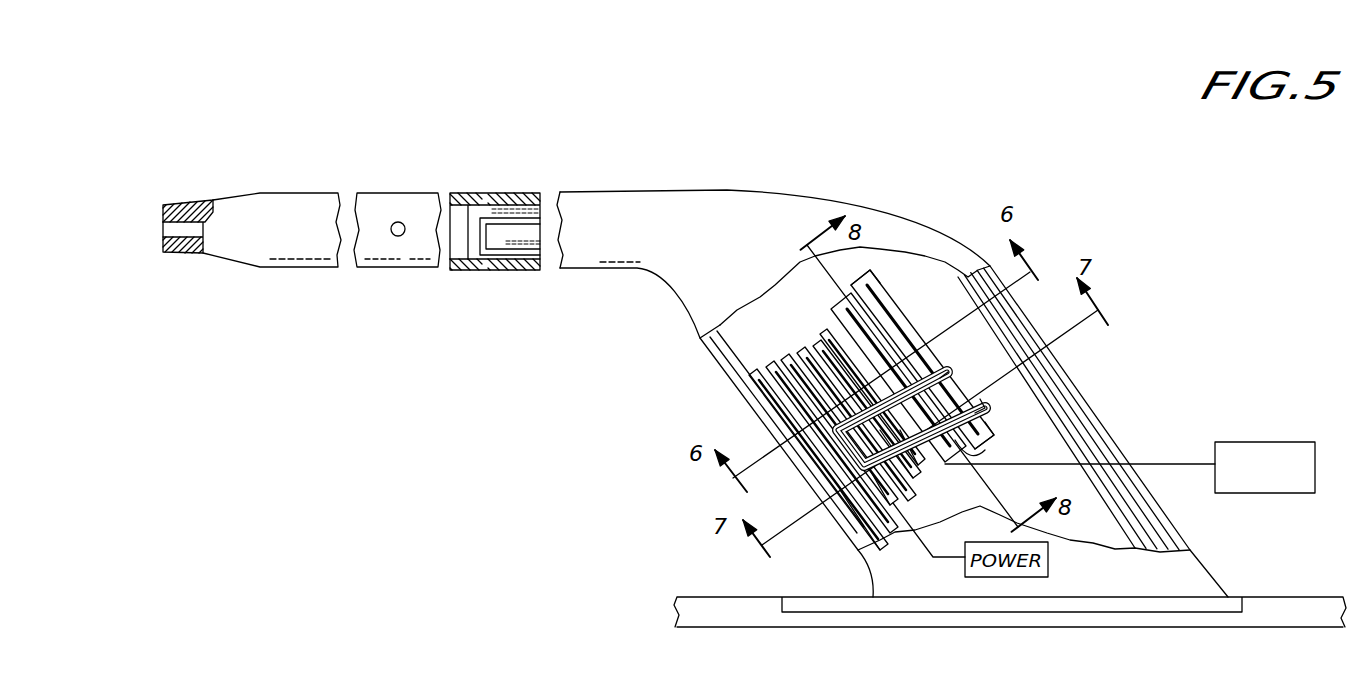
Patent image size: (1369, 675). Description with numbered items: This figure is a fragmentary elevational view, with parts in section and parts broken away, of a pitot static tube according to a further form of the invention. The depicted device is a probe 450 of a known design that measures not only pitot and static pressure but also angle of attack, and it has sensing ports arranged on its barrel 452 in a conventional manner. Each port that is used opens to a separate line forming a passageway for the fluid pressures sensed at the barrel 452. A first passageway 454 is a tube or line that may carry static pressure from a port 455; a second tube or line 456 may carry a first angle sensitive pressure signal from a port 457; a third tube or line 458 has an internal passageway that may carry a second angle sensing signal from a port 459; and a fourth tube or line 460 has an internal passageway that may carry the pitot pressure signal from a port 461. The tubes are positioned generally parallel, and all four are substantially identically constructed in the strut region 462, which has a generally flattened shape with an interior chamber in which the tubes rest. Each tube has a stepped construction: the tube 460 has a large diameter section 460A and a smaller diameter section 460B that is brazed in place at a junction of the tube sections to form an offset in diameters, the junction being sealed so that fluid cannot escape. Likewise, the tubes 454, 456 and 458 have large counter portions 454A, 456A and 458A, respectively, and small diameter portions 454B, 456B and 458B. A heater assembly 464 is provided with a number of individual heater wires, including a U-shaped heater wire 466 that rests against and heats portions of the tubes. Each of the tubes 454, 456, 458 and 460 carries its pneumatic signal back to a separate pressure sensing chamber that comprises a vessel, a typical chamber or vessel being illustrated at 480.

The probe 450 is at (892, 363).
The barrel 452 is at (397, 210).
The first passageway 454 is at (826, 432).
The large counter portion 454A is at (725, 454).
The small diameter portion 454B is at (921, 535).
The port 455 is at (364, 263).
The second tube or line 456 is at (865, 383).
The large counter portion 456A is at (776, 430).
The small diameter portion 456B is at (948, 471).
The port 457 is at (504, 212).
The third tube or line 458 is at (862, 349).
The large counter portion 458A is at (905, 274).
The small diameter portion 458B is at (1080, 459).
The port 459 is at (505, 285).
The fourth tube or line 460 is at (911, 321).
The large diameter section 460A is at (977, 358).
The smaller diameter section 460B is at (1014, 450).
The port 461 is at (200, 245).
The strut region 462 is at (1074, 408).
The heater assembly 464 is at (782, 462).
The U-shaped heater wire 466 is at (1013, 418).
The chamber or vessel 480 is at (1285, 447).